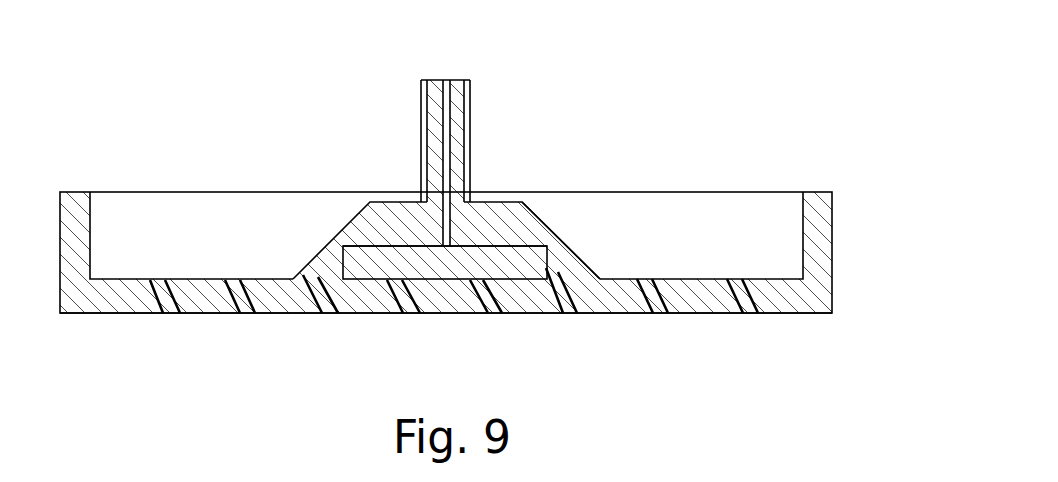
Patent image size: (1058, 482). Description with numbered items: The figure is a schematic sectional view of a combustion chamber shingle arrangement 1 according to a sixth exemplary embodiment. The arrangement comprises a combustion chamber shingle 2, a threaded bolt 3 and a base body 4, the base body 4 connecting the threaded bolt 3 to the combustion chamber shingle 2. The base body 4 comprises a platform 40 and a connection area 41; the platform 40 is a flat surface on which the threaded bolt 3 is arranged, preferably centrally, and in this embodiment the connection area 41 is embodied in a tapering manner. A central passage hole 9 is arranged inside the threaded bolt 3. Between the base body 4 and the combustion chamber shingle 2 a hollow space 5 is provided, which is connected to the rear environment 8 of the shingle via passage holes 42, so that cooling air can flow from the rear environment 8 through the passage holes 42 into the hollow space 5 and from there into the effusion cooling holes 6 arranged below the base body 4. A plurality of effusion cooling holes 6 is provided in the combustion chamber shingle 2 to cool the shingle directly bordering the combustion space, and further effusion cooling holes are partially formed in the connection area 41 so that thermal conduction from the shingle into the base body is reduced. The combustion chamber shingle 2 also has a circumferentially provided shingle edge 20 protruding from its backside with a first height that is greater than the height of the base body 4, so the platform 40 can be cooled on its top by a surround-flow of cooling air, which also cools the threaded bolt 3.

The combustion chamber shingle arrangement 1 is at (173, 146).
The combustion chamber shingle 2 is at (542, 295).
The threaded bolt 3 is at (435, 92).
The base body 4 is at (370, 199).
The hollow space 5 is at (343, 249).
The effusion cooling holes 6 is at (175, 302).
The rear environment 8 is at (177, 245).
The central passage hole 9 is at (443, 122).
The shingle edge 20 is at (813, 246).
The platform 40 is at (492, 229).
The connection area 41 is at (557, 258).
The passage holes 42 is at (346, 265).